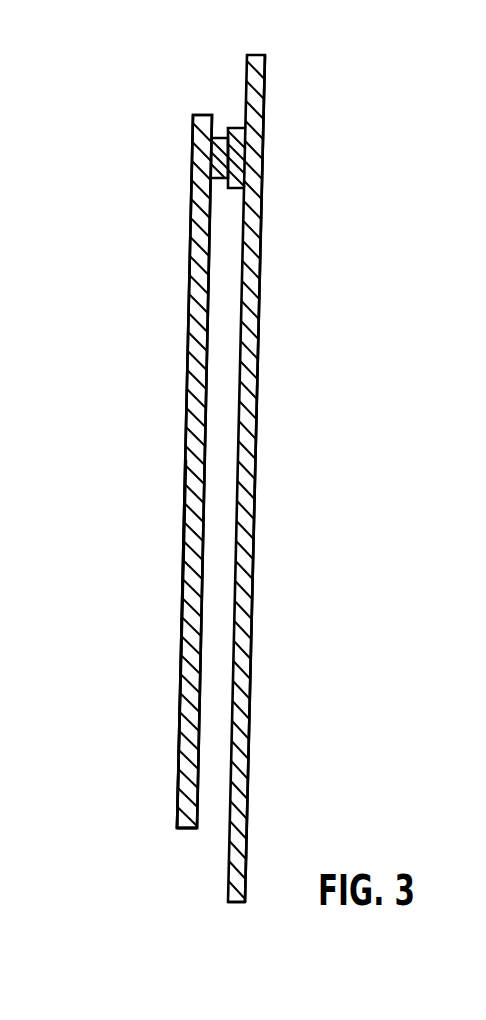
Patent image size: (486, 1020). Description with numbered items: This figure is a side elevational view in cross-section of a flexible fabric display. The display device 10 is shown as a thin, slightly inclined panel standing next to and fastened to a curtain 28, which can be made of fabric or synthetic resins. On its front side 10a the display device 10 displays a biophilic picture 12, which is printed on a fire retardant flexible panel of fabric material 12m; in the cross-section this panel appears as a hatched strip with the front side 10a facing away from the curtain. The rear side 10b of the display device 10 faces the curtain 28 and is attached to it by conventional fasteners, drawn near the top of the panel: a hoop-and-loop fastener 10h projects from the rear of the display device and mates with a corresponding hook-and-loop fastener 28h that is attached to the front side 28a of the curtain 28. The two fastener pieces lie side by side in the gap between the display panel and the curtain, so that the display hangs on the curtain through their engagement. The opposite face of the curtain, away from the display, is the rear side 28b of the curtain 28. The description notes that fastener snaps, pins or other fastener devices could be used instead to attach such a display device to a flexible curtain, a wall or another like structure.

The display device 10 is at (195, 409).
The biophilic picture 12 is at (190, 240).
The hoop-and-loop fastener 10h is at (222, 136).
The hook-and-loop fastener 28h is at (242, 126).
The curtain 28 is at (255, 258).
The rear side of curtain 28b is at (257, 458).
The front side 10a is at (179, 700).
The fire retardant flexible panel of fabric material 12m is at (192, 792).
The rear side 10b is at (198, 808).
The front side of curtain 28a is at (230, 894).